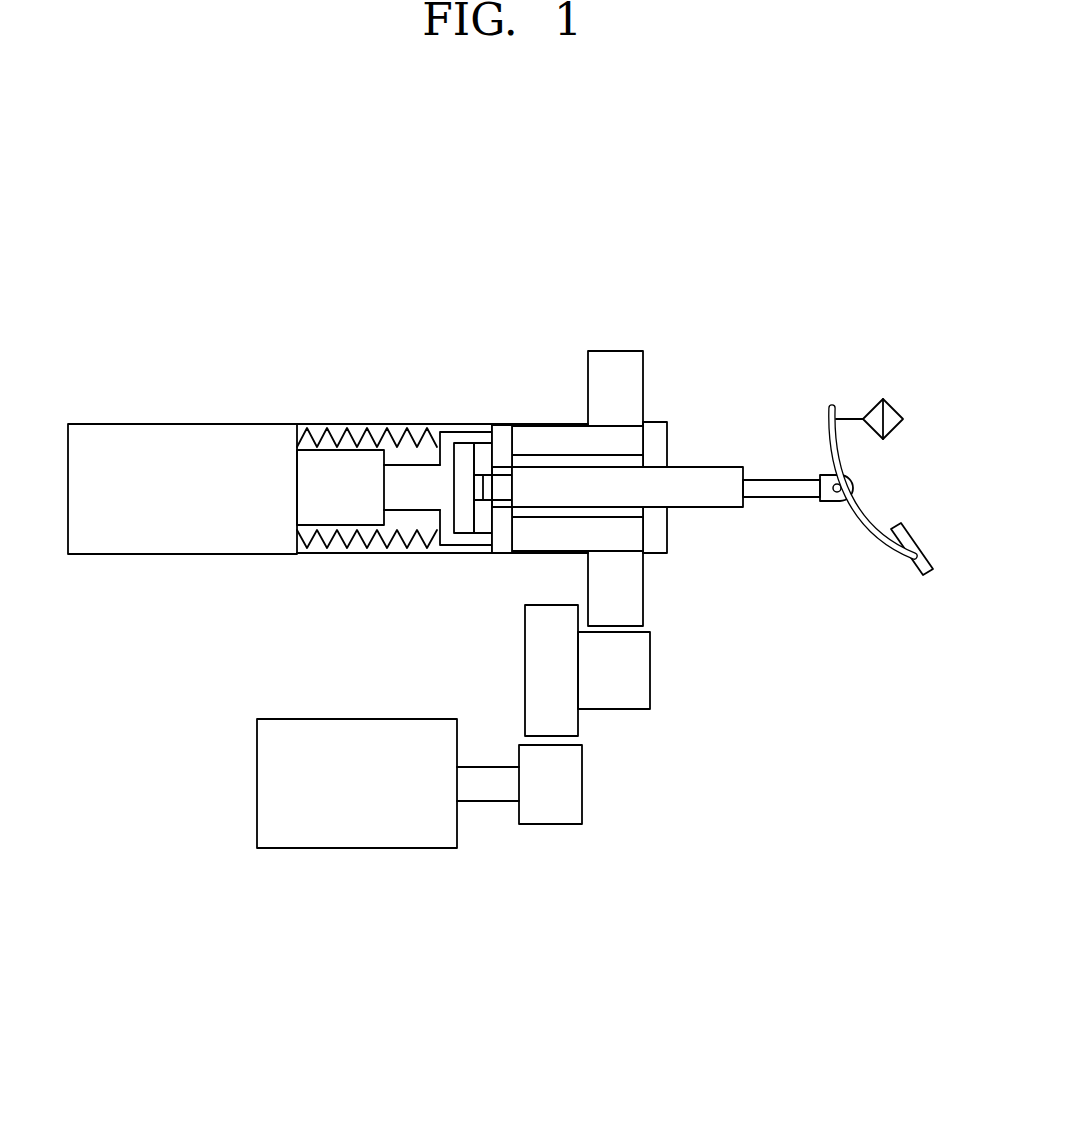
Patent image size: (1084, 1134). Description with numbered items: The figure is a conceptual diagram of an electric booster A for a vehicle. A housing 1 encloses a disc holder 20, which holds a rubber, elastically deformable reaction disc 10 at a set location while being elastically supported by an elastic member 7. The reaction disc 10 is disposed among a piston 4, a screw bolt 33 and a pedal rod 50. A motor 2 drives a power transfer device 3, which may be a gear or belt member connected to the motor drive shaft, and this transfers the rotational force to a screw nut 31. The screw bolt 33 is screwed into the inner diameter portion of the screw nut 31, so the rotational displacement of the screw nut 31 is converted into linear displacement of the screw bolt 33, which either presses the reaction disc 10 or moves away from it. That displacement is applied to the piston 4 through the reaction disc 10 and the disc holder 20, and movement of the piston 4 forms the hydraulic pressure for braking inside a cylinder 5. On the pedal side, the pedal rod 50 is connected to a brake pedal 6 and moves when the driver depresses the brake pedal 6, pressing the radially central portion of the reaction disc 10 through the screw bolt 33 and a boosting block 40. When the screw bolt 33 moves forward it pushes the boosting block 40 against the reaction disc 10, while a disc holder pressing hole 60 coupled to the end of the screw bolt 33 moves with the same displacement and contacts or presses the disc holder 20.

The housing 1 is at (355, 440).
The motor 2 is at (357, 827).
The power transfer device 3 is at (668, 690).
The piston 4 is at (360, 510).
The cylinder 5 is at (210, 540).
The brake pedal 6 is at (903, 525).
The elastic member 7 is at (330, 440).
The reaction disc 10 is at (465, 445).
The disc holder 20 is at (446, 436).
The screw nut 31 is at (565, 445).
The screw bolt 33 is at (547, 456).
The boosting block 40 is at (484, 445).
The pedal rod 50 is at (698, 480).
The disc holder pressing hole 60 is at (504, 436).
The electric booster A is at (762, 372).